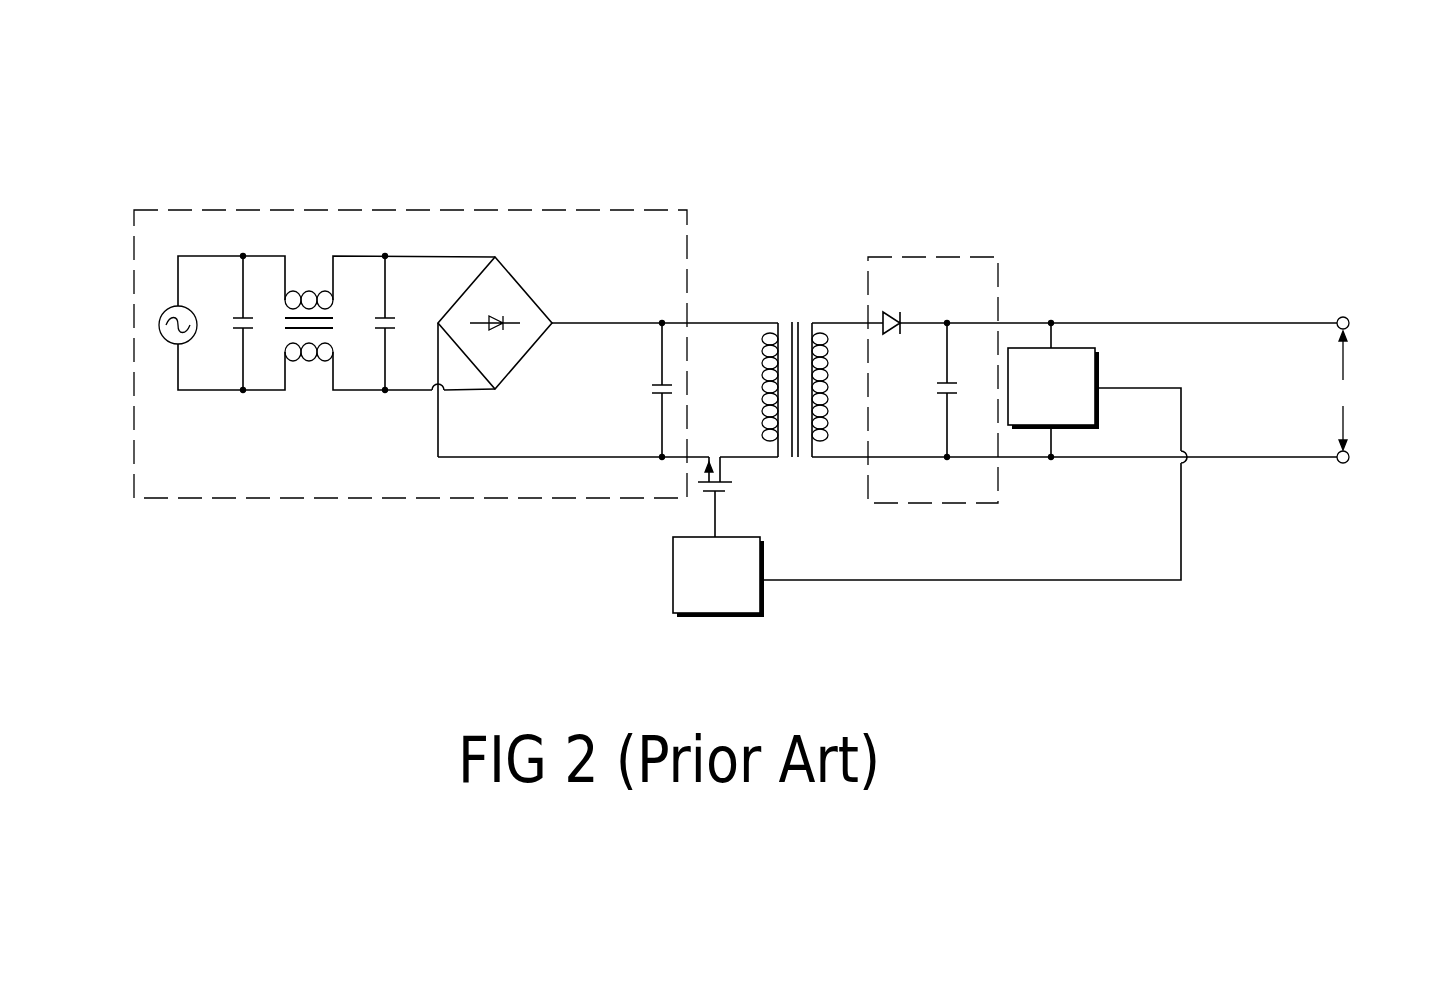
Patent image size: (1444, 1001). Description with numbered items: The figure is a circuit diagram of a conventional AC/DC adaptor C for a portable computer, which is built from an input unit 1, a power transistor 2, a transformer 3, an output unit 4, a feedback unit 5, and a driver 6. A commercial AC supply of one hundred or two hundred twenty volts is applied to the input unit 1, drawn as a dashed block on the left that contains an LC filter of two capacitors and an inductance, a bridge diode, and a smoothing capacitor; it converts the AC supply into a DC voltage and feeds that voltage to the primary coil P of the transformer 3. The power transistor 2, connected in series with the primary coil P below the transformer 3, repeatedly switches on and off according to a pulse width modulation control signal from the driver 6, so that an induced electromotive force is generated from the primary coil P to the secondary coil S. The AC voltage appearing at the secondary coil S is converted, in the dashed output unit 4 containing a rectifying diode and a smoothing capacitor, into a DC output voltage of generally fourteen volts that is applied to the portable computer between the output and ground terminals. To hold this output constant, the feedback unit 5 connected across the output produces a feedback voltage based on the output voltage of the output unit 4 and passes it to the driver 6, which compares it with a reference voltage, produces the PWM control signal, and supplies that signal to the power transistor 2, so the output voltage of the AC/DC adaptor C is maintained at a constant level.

The input unit 1 is at (449, 210).
The power transistor 2 is at (733, 490).
The transformer 3 is at (800, 323).
The output unit 4 is at (937, 257).
The feedback unit 5 is at (1097, 370).
The driver 6 is at (762, 558).
The AC/DC adaptor C is at (703, 146).
The primary coil P is at (773, 322).
The secondary coil S is at (820, 320).